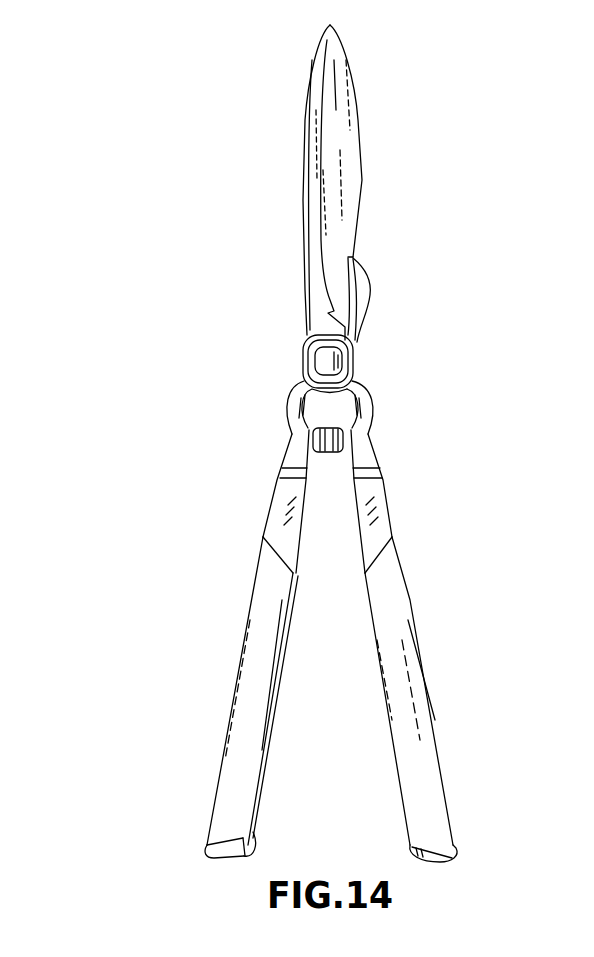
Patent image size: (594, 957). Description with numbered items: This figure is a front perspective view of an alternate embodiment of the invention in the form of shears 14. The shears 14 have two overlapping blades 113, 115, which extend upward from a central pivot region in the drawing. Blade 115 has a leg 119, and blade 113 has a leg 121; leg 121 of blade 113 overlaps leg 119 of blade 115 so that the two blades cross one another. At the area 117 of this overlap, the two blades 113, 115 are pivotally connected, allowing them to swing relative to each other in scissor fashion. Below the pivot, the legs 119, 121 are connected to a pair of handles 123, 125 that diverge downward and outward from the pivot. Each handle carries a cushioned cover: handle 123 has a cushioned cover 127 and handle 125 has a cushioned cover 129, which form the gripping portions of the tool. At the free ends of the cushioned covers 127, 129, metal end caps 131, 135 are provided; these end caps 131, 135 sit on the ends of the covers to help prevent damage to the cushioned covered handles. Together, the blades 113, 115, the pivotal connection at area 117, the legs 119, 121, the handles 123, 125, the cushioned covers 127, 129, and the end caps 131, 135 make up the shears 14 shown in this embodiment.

The shears 14 is at (423, 135).
The blade 113 is at (303, 148).
The blade 115 is at (355, 232).
The area of overlap 117 is at (359, 350).
The leg 119 is at (292, 390).
The leg 121 is at (372, 398).
The handle 123 is at (273, 488).
The handle 125 is at (388, 490).
The cushioned cover 127 is at (240, 645).
The cushioned cover 129 is at (418, 657).
The metal end cap 131 is at (258, 840).
The metal end cap 135 is at (410, 850).